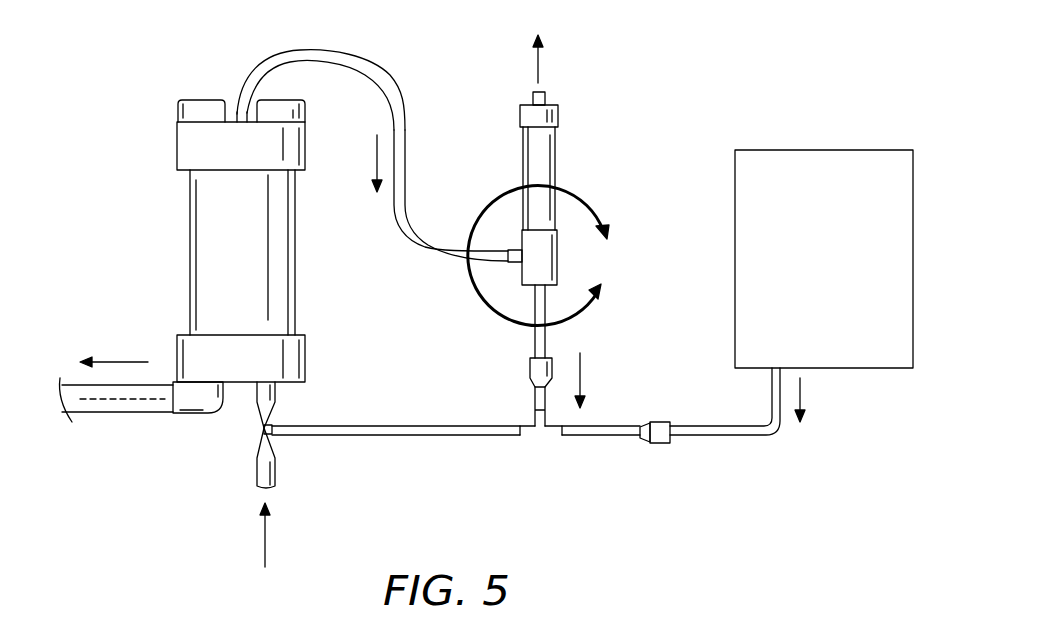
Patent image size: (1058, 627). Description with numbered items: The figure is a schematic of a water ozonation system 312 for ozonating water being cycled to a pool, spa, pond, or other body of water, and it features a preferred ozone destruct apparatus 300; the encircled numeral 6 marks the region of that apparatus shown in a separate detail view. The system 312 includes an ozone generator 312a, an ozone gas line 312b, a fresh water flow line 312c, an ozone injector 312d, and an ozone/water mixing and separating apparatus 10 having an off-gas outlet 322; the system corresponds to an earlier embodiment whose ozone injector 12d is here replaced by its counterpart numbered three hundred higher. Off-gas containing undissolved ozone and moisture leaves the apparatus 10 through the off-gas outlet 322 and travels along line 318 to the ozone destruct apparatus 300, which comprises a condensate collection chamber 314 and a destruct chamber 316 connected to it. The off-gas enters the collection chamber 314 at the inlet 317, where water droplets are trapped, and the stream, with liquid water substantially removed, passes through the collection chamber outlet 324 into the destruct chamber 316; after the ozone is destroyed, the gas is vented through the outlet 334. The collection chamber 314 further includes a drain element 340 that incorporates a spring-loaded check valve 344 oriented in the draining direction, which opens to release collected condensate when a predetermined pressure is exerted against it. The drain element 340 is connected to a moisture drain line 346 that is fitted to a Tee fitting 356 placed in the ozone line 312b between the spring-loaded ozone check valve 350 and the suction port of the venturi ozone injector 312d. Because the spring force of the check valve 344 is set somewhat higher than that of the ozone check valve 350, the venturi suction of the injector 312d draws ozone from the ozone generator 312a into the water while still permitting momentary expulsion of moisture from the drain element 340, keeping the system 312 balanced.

The water ozonation system 312 is at (142, 148).
The off-gas outlet 322 is at (235, 117).
The ozone/water mixing and separating apparatus 10 is at (184, 288).
The ozone injector 12d is at (274, 412).
The ozone injector 312d is at (256, 434).
The fresh water flow line 312c is at (274, 466).
The destruct chamber 316 is at (523, 157).
The outlet 334 is at (546, 97).
The ozone destruct apparatus 300 is at (590, 137).
The line 318 is at (430, 233).
The collection chamber outlet 324 is at (558, 250).
The condensate collection chamber 314 is at (542, 232).
The inlet 317 is at (513, 262).
The drain element 340 is at (554, 306).
The check valve 344 is at (530, 380).
The moisture drain line 346 is at (535, 400).
The Tee fitting 356 is at (538, 437).
The ozone gas line 312b is at (587, 437).
The ozone check valve 350 is at (662, 423).
The ozone generator 312a is at (842, 337).
The section indicator for FIG. 6 is at (550, 256).